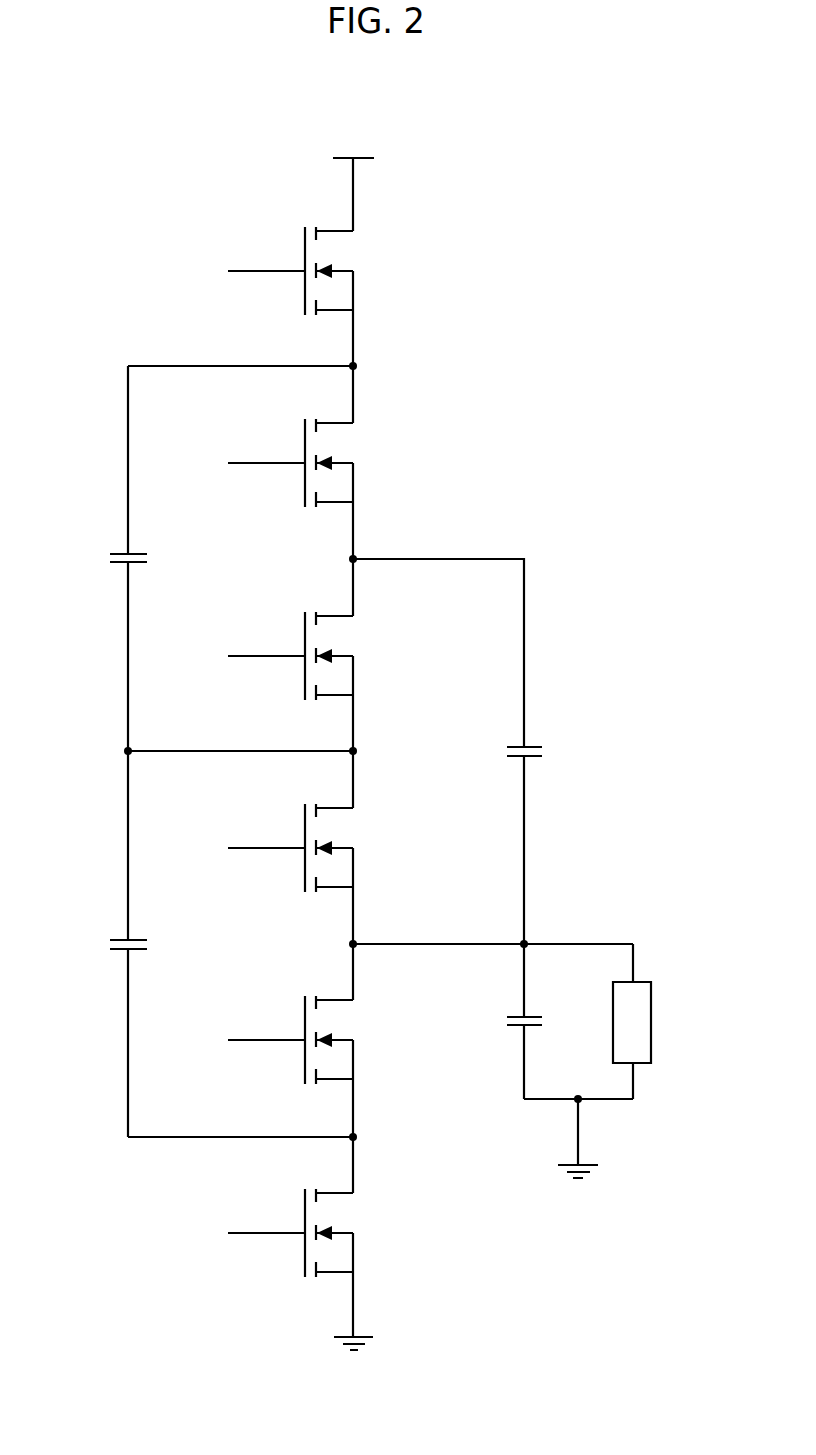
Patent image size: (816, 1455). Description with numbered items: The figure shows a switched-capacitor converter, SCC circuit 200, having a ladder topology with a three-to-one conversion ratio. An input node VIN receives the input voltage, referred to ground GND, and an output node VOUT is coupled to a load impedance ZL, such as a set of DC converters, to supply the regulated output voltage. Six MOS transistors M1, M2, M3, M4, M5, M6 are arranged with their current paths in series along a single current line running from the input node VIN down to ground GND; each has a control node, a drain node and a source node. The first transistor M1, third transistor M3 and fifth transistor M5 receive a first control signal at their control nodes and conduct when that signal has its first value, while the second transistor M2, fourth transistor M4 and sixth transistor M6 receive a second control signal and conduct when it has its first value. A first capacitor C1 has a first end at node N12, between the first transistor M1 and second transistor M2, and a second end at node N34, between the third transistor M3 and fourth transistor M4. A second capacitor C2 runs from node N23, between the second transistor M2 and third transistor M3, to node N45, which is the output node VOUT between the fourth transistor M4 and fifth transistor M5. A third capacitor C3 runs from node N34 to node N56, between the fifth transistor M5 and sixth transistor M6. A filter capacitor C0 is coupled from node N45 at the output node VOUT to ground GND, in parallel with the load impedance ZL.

The SCC circuit 200 is at (563, 327).
The first transistor M1 is at (343, 247).
The second transistor M2 is at (343, 440).
The third transistor M3 is at (343, 633).
The fourth transistor M4 is at (343, 825).
The fifth transistor M5 is at (343, 1017).
The sixth transistor M6 is at (343, 1210).
The first capacitor end of the first capacitor N12 is at (356, 364).
The first capacitor end of the second capacitor N23 is at (356, 557).
The second capacitor end of the first capacitor N34 is at (356, 749).
The second capacitor end of the second capacitor N45 is at (356, 942).
The second capacitor end of the third capacitor N56 is at (356, 1135).
The first capacitor C1 is at (121, 552).
The second capacitor C2 is at (532, 744).
The third capacitor C3 is at (121, 940).
The filter capacitor C0 is at (515, 1028).
The load impedance ZL is at (630, 1027).
The input node VIN is at (353, 171).
The output node VOUT is at (493, 920).
The ground GND is at (347, 1348).